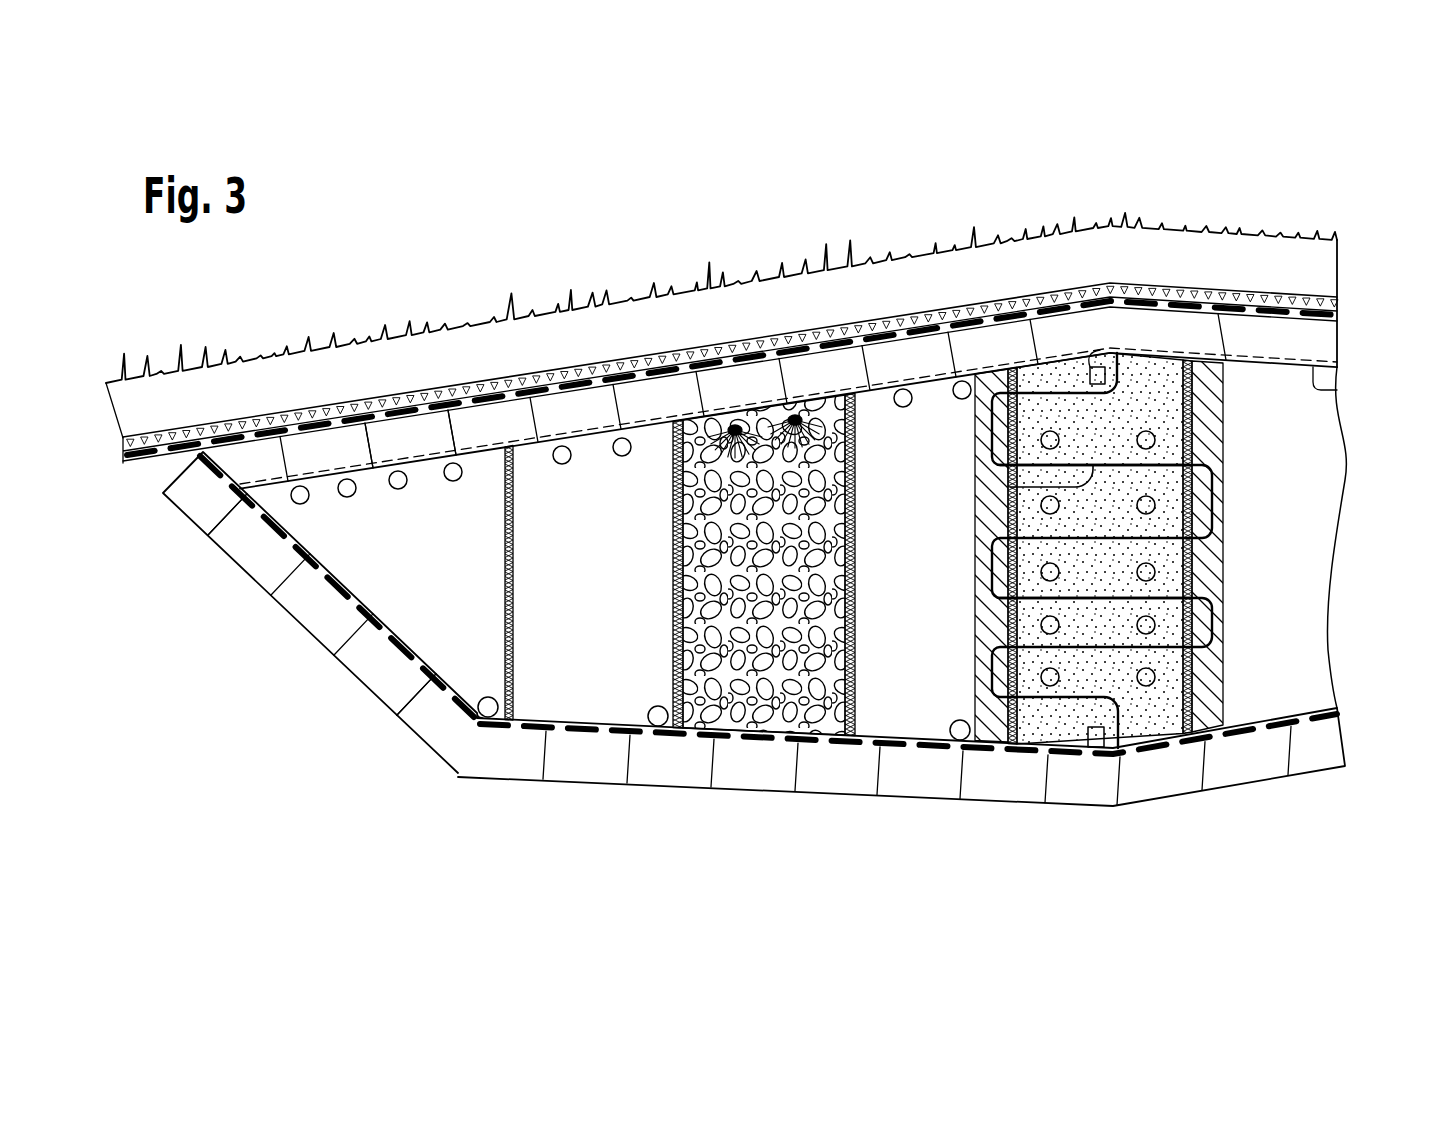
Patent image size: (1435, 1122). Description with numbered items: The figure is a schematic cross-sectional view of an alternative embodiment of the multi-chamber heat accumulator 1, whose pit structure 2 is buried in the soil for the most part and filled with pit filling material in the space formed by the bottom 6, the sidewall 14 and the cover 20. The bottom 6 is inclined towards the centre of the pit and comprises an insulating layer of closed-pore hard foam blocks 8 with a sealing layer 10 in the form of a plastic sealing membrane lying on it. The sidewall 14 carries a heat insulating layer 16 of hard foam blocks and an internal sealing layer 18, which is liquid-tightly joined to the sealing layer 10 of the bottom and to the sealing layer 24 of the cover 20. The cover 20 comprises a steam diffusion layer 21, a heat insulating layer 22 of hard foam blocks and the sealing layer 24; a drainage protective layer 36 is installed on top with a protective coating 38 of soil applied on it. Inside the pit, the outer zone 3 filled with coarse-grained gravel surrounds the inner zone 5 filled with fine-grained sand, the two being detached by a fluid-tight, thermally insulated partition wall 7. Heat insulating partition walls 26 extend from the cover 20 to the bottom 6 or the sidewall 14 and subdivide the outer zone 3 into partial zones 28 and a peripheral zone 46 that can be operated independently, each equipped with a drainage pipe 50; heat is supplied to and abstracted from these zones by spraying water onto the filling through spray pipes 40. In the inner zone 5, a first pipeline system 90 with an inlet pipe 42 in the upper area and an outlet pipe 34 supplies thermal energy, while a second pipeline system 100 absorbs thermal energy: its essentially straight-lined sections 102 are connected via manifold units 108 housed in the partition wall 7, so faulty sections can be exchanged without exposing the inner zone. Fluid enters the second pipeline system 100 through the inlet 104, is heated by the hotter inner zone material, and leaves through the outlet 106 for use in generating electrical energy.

The multi-chamber heat accumulator 1 is at (272, 625).
The pit structure 2 is at (322, 655).
The outer zone 3 is at (597, 710).
The inner zone 5 is at (1168, 408).
The bottom 6 is at (508, 782).
The partition wall 7 is at (984, 688).
The hard foam blocks 8 is at (645, 773).
The sealing layer 10 is at (566, 725).
The sidewall 14 is at (410, 730).
The heat insulating layer 16 is at (213, 517).
The sealing layer 18 is at (362, 603).
The cover 20 is at (1323, 347).
The steam diffusion layer 21 is at (1322, 388).
The heat insulating layer 22 is at (960, 352).
The sealing layer 24 is at (318, 410).
The partition walls 26 is at (676, 594).
The partial zones 28 is at (885, 718).
The outlet pipe 34 is at (1095, 750).
The drainage protective layer 36 is at (1290, 298).
The protective coating 38 is at (1103, 252).
The spray pipes 40 is at (795, 414).
The inlet pipe 42 is at (1090, 370).
The peripheral zone 46 is at (432, 500).
The drainage pipe 50 is at (660, 722).
The first pipeline system 90 is at (1152, 442).
The second pipeline system 100 is at (1214, 506).
The sections 102 is at (1000, 485).
The inlet 104 is at (1157, 363).
The outlet 106 is at (1142, 753).
The manifold units 108 is at (1000, 565).